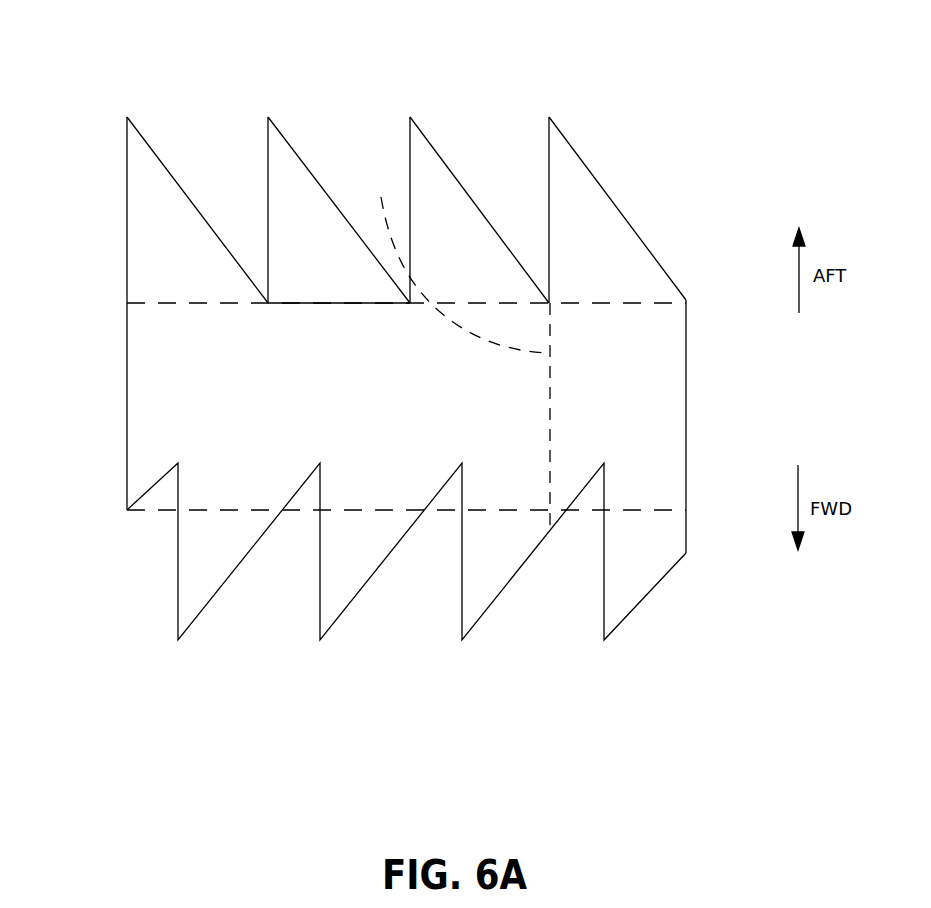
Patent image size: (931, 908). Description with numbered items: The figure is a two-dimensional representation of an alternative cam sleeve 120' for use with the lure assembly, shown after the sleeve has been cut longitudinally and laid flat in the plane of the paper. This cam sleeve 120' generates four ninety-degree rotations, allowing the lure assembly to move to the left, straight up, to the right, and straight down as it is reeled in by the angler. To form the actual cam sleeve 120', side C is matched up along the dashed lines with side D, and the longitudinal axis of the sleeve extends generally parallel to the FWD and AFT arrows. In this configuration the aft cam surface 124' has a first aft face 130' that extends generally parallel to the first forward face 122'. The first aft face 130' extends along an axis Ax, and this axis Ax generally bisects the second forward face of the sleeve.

The cam sleeve 120' is at (396, 369).
The first forward face 122' is at (406, 564).
The aft cam surface 124' is at (420, 181).
The first aft face 130' is at (498, 181).
The axis Ax is at (453, 262).
The side D is at (127, 398).
The side C is at (686, 397).